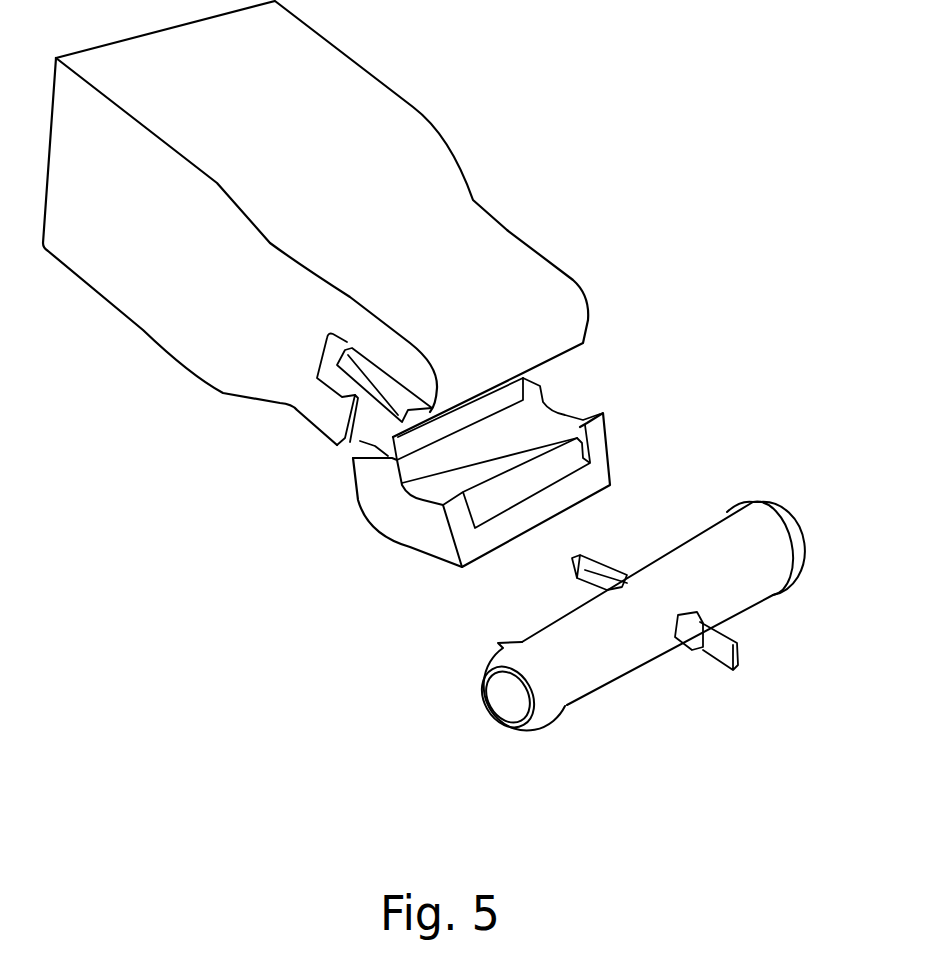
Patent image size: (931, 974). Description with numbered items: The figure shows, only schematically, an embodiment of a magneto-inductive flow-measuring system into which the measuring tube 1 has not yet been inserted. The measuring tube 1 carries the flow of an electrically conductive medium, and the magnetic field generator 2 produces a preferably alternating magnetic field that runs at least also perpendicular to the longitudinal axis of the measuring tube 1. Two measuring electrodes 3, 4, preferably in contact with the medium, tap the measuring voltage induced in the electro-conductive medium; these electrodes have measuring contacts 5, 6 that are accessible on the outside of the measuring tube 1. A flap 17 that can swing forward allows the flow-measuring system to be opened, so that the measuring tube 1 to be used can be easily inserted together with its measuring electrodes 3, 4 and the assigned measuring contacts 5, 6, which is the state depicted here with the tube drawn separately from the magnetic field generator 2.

The measuring tube 1 is at (728, 567).
The magnetic field generator 2 is at (222, 329).
The measuring electrode 3 is at (641, 493).
The measuring contact 5 is at (595, 562).
The measuring electrode 4 is at (700, 710).
The measuring contact 6 is at (720, 653).
The flap 17 is at (415, 533).